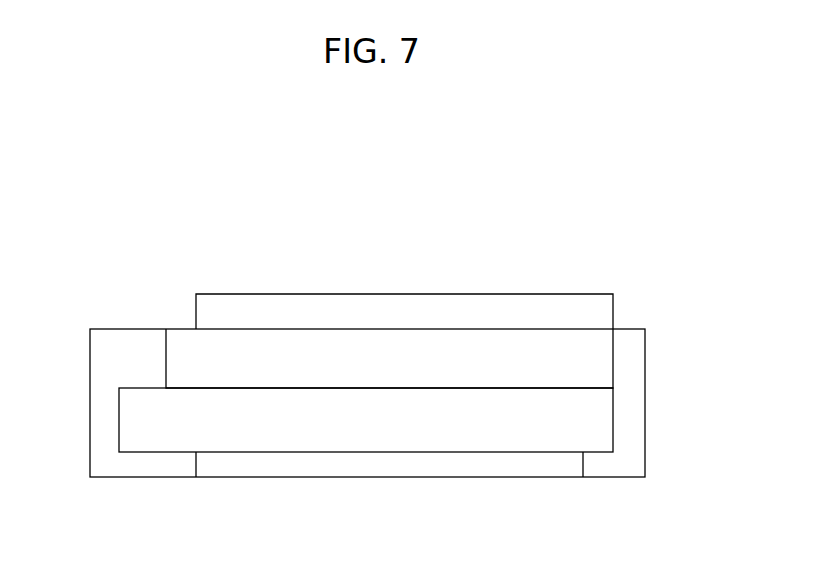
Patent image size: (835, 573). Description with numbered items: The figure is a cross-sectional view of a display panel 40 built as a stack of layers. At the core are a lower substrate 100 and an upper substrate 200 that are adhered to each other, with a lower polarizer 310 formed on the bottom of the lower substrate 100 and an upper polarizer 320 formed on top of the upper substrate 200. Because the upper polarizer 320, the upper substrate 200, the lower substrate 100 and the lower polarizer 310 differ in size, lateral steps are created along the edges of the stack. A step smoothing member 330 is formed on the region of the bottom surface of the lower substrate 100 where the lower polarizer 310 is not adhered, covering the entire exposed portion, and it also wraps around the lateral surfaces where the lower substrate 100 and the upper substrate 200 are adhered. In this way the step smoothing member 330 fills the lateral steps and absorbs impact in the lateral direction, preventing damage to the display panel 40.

The display panel 40 is at (118, 252).
The lower substrate 100 is at (411, 420).
The upper substrate 200 is at (610, 349).
The lower polarizer 310 is at (391, 477).
The upper polarizer 320 is at (613, 305).
The step smoothing member 330 is at (98, 402).